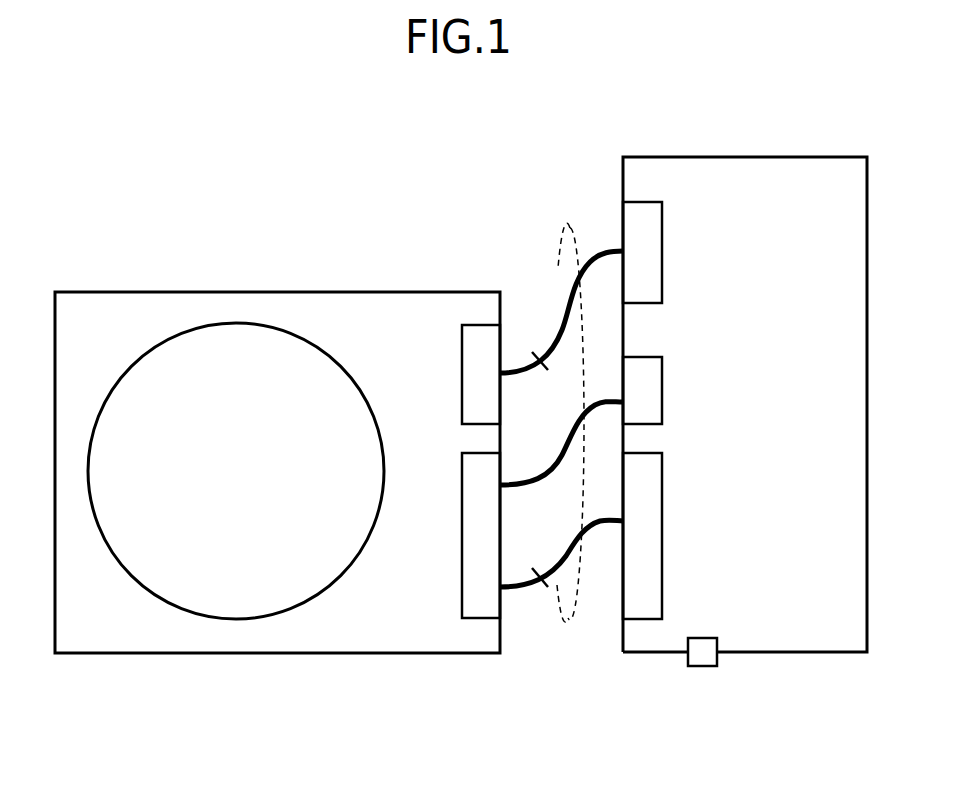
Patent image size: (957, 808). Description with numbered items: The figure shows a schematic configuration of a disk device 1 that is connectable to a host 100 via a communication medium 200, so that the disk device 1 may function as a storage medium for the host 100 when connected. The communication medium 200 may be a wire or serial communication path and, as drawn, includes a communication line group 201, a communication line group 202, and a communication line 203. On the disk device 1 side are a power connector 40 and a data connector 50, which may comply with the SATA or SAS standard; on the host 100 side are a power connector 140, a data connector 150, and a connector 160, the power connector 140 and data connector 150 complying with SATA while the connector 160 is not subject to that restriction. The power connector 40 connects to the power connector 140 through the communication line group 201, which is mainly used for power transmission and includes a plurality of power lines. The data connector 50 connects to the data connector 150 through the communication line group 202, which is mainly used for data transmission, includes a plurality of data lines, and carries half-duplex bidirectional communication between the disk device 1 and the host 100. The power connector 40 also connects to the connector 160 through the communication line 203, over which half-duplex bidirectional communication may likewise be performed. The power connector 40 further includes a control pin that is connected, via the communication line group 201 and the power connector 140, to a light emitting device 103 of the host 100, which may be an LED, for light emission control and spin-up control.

The disk device 1 is at (279, 308).
The power connector 40 is at (480, 537).
The data connector 50 is at (480, 373).
The host 100 is at (745, 175).
The light emitting device 103 is at (705, 650).
The power connector 140 is at (642, 540).
The data connector 150 is at (642, 252).
The connector 160 is at (642, 390).
The communication medium 200 is at (569, 230).
The communication line group 201 is at (540, 592).
The communication line group 202 is at (540, 376).
The communication line 203 is at (540, 490).